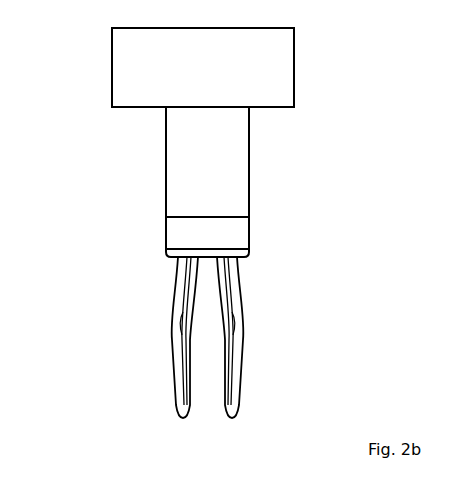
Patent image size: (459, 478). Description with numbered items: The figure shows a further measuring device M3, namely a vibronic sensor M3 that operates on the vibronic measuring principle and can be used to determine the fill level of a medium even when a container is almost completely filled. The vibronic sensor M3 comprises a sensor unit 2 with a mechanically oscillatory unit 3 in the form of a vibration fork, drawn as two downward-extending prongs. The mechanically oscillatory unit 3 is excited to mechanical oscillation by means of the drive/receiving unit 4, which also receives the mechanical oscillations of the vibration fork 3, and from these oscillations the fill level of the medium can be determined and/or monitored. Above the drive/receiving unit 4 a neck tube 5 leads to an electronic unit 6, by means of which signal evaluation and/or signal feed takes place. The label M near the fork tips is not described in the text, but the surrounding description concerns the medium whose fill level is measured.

The sensor unit 2 is at (312, 308).
The mechanically oscillatory unit 3 is at (258, 338).
The drive/receiving unit 4 is at (207, 237).
The neck tube 5 is at (207, 162).
The electronic unit 6 is at (203, 67).
The measuring device M3 is at (88, 64).
The material / object M is at (151, 423).